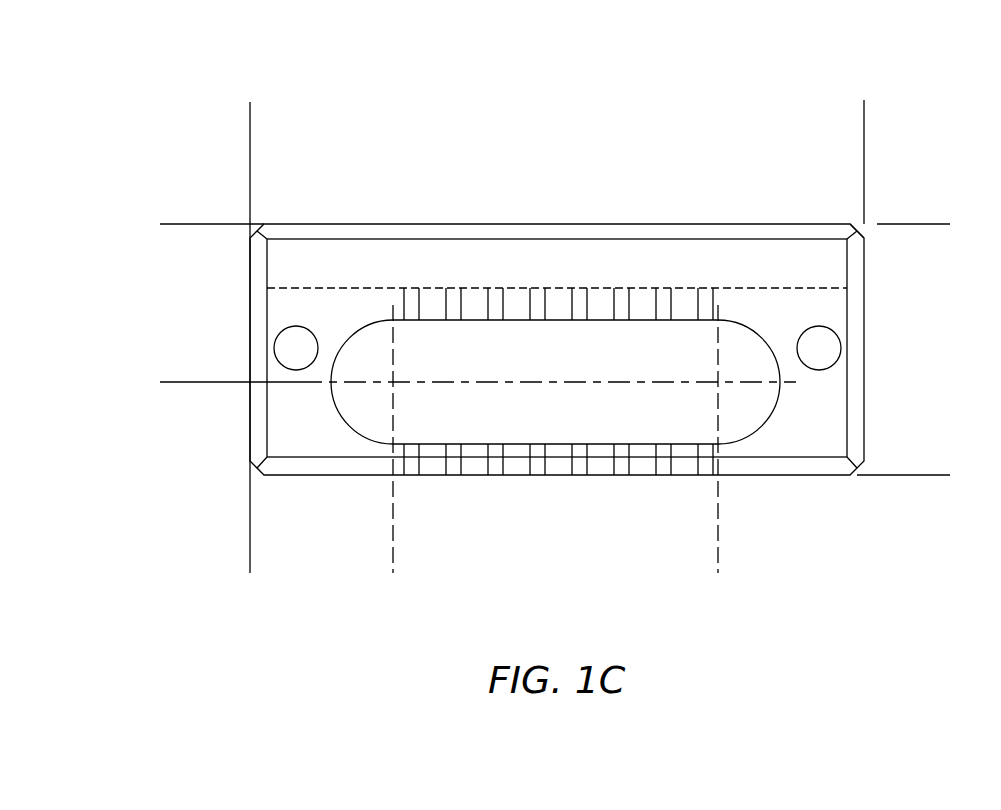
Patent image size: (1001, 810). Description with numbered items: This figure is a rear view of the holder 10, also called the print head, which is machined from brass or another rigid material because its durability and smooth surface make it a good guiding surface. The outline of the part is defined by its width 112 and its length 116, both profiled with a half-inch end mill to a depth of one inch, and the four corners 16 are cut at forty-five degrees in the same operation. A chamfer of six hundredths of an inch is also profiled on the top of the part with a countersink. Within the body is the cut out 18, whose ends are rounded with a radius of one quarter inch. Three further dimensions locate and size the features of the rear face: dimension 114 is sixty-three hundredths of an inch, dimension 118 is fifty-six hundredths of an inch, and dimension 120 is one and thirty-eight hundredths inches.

The holder 10 is at (920, 93).
The corners 16 is at (862, 227).
The cut out 18 is at (769, 415).
The width 112 is at (250, 106).
The dimension 114 is at (164, 224).
The length 116 is at (942, 224).
The dimension 118 is at (182, 567).
The dimension 120 is at (393, 567).